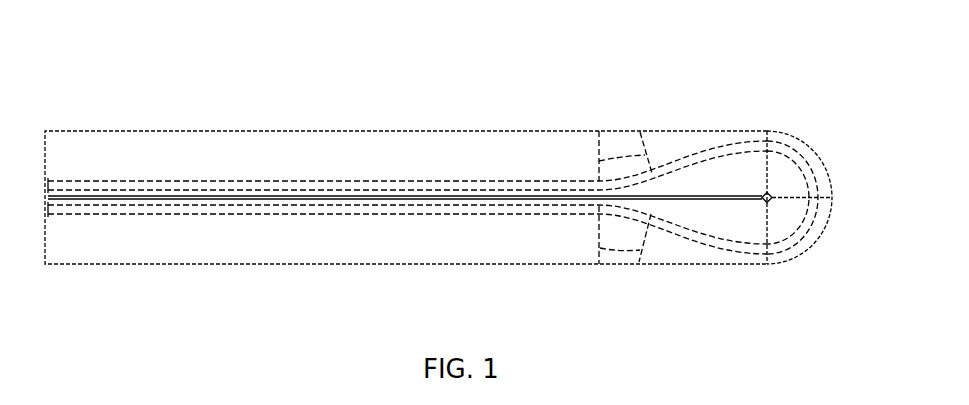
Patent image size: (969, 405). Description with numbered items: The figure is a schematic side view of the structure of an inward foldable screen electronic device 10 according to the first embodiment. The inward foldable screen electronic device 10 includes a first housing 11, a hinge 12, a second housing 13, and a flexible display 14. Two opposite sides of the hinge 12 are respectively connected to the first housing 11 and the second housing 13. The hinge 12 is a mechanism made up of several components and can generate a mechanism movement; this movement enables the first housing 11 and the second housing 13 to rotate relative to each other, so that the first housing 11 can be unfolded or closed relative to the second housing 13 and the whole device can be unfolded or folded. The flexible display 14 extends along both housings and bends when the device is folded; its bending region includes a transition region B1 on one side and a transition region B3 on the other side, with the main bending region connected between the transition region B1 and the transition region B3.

The inward foldable screen electronic device 10 is at (56, 40).
The first housing 11 is at (377, 145).
The hinge 12 is at (827, 190).
The second housing 13 is at (548, 243).
The flexible display 14 is at (288, 207).
The transition region B1 is at (625, 156).
The transition region B3 is at (625, 235).